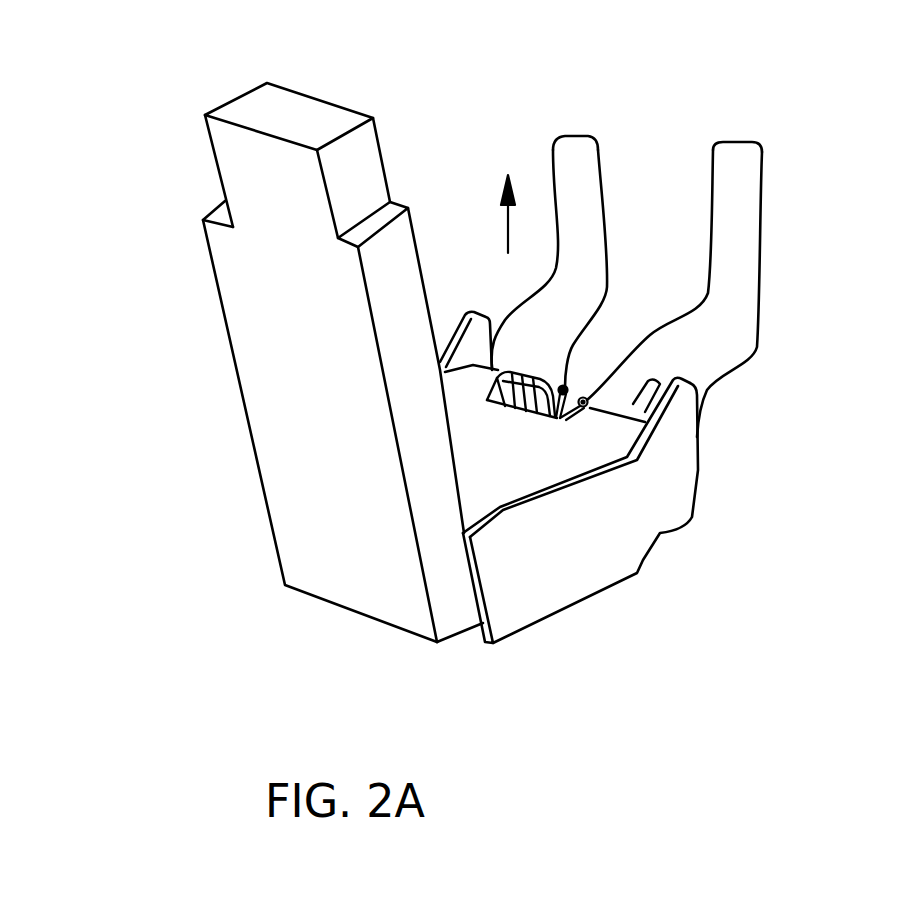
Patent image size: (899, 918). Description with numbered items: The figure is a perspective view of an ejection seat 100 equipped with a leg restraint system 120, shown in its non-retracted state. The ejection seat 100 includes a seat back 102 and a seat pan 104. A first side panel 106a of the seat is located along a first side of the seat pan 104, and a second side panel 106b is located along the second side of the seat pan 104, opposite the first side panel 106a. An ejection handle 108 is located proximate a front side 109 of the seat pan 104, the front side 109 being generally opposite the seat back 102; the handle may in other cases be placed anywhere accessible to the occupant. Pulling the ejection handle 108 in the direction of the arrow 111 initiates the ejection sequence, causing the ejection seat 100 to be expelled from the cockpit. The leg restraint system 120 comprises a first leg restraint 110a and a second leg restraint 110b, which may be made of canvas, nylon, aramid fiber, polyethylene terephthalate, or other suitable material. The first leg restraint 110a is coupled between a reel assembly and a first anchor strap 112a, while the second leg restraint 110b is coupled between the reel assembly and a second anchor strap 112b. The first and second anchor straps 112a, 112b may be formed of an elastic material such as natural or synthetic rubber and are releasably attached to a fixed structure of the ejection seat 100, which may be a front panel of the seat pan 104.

The ejection seat 100 is at (140, 98).
The seat back 102 is at (315, 427).
The seat pan 104 is at (503, 454).
The first side panel 106a is at (587, 542).
The second side panel 106b is at (475, 317).
The ejection handle 108 is at (533, 384).
The front side 109 is at (648, 382).
The first leg restraint 110a is at (735, 141).
The second leg restraint 110b is at (573, 135).
The arrow 111 is at (509, 232).
The first anchor strap 112a is at (584, 404).
The second anchor strap 112b is at (557, 420).
The leg restraint system 120 is at (807, 177).